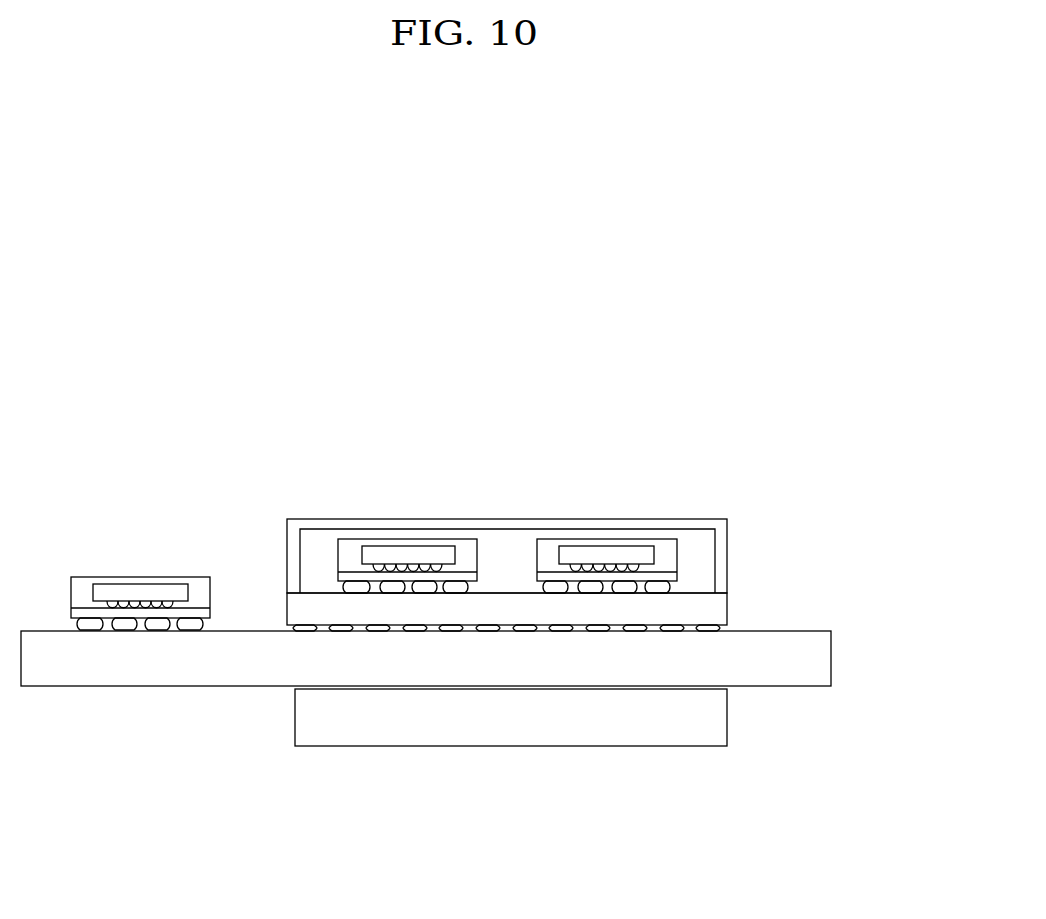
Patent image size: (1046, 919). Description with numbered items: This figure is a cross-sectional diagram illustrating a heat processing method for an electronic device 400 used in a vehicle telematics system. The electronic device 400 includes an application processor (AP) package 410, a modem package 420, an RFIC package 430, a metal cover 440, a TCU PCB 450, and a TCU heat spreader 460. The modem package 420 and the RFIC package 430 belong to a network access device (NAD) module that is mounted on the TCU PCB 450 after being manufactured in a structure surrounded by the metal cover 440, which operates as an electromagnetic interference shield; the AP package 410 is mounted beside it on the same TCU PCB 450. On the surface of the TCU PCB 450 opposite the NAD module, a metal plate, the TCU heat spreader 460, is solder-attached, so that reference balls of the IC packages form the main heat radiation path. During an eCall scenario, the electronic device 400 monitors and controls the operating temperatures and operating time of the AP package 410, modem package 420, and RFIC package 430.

The electronic device 400 is at (884, 459).
The application processor (AP) package 410 is at (182, 577).
The modem package 420 is at (449, 539).
The RFIC package 430 is at (648, 539).
The metal cover 440 is at (727, 560).
The TCU PCB 450 is at (823, 656).
The TCU heat spreader 460 is at (719, 716).